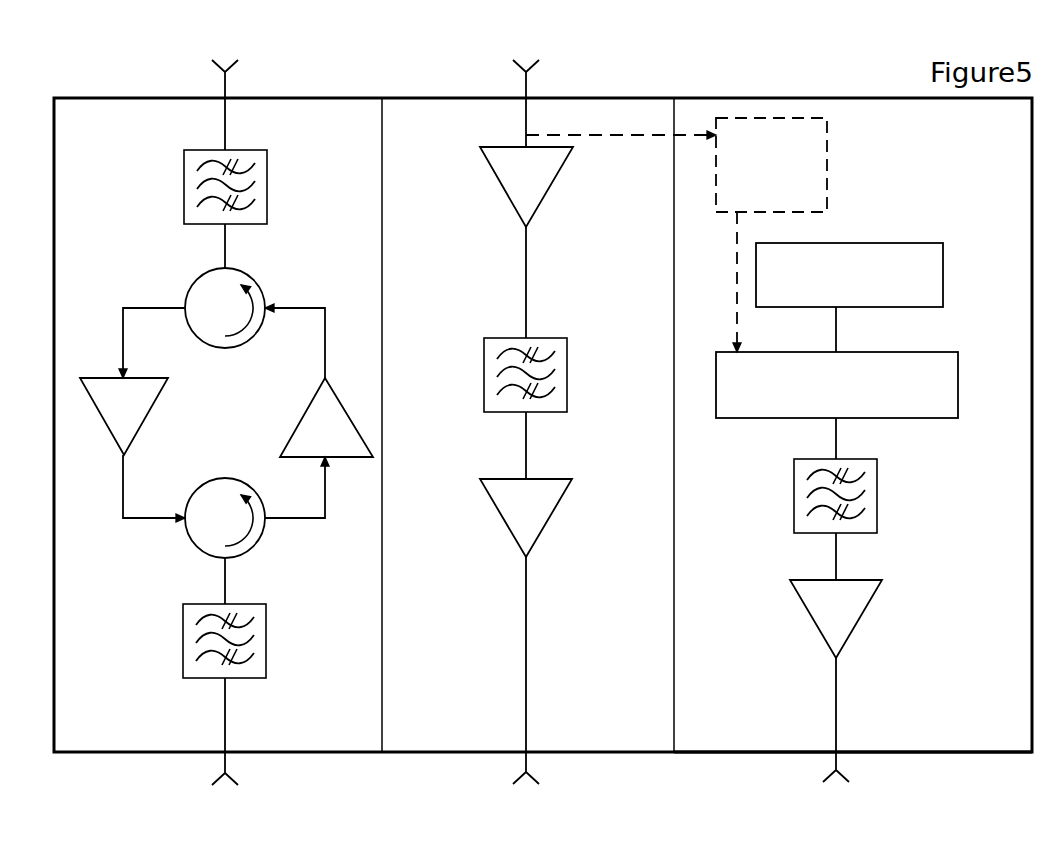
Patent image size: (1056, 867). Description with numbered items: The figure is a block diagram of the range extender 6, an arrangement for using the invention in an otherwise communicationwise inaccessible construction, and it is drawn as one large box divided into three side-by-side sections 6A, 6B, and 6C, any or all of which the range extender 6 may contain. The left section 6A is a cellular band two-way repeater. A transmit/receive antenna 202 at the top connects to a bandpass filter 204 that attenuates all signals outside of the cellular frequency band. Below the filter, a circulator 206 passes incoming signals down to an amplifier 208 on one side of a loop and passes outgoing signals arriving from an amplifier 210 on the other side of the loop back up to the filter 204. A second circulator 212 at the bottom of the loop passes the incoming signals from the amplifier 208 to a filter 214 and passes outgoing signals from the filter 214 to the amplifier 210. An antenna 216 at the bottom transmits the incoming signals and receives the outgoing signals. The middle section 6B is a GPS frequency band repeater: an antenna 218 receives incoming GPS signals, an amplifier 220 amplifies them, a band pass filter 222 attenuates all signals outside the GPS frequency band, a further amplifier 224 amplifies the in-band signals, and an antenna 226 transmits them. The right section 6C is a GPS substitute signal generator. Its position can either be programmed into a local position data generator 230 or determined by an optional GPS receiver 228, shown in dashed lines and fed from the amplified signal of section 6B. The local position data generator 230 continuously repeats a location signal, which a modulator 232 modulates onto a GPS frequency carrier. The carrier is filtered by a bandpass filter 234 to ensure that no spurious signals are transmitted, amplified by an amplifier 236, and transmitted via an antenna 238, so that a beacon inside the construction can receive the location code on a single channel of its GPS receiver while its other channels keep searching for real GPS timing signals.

The range extender 6 is at (345, 88).
The cellular band two-way repeater section 6A is at (143, 728).
The GPS frequency band repeater section 6B is at (437, 718).
The GPS substitute signal generator section 6C is at (757, 717).
The transmit/receive antenna 202 is at (224, 50).
The bandpass filter 204 is at (173, 185).
The circulator 206 is at (185, 285).
The amplifier 208 is at (98, 430).
The amplifier 210 is at (345, 465).
The circulator 212 is at (182, 542).
The filter 214 is at (173, 648).
The antenna 216 is at (218, 790).
The antenna 218 is at (525, 53).
The amplifier 220 is at (500, 193).
The band pass filter 222 is at (577, 378).
The amplifier 224 is at (560, 520).
The antenna 226 is at (527, 792).
The GPS receiver 228 is at (763, 110).
The local position data generator 230 is at (907, 235).
The modulator 232 is at (968, 360).
The bandpass filter 234 is at (890, 520).
The amplifier 236 is at (873, 617).
The antenna 238 is at (838, 787).